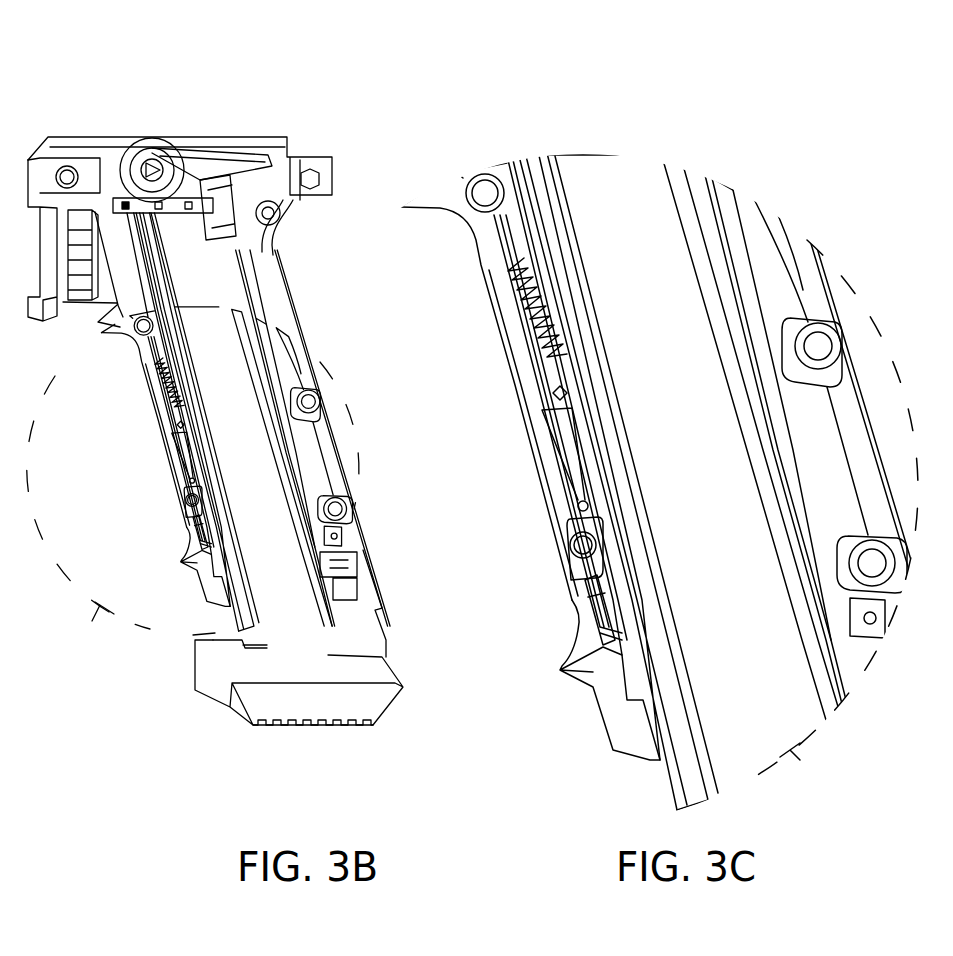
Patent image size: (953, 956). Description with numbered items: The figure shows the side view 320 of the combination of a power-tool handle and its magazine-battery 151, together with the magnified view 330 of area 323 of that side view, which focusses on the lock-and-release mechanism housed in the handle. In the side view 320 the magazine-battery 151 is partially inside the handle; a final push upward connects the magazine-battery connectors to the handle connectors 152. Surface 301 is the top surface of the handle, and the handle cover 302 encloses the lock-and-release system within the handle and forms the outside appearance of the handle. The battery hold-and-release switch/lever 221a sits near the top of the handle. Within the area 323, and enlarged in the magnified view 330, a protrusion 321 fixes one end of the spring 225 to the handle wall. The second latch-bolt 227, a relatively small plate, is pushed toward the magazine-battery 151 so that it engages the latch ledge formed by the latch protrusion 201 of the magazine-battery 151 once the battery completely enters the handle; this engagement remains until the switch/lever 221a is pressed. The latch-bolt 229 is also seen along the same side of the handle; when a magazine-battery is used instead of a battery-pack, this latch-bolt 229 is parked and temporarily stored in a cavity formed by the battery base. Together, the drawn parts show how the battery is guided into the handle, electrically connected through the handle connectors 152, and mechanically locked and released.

In FIG. 3B, the side view 320 is at (183, 50).
In FIG. 3C, the magnified view 330 is at (652, 50).
In FIG. 3B, the top surface of handle 301 is at (65, 143).
In FIG. 3B, the battery hold-and-release switch/lever 221a is at (222, 166).
In FIG. 3B, the protrusion 321 is at (150, 354).
In FIG. 3C, the protrusion 321 is at (510, 264).
In FIG. 3B, the spring 225 is at (160, 383).
In FIG. 3C, the spring 225 is at (513, 323).
In FIG. 3B, the handle cover 302 is at (163, 423).
In FIG. 3C, the handle cover 302 is at (527, 394).
In FIG. 3C, the second latch-bolt 227 is at (568, 463).
In FIG. 3C, the latch protrusion 201 is at (579, 533).
In FIG. 3C, the latch-bolt 229 is at (560, 670).
In FIG. 3B, the magazine-battery 151 is at (267, 618).
In FIG. 3C, the magazine-battery 151 is at (617, 182).
In FIG. 3B, the handle connectors 152 is at (355, 588).
In FIG. 3B, the area 323 is at (100, 636).